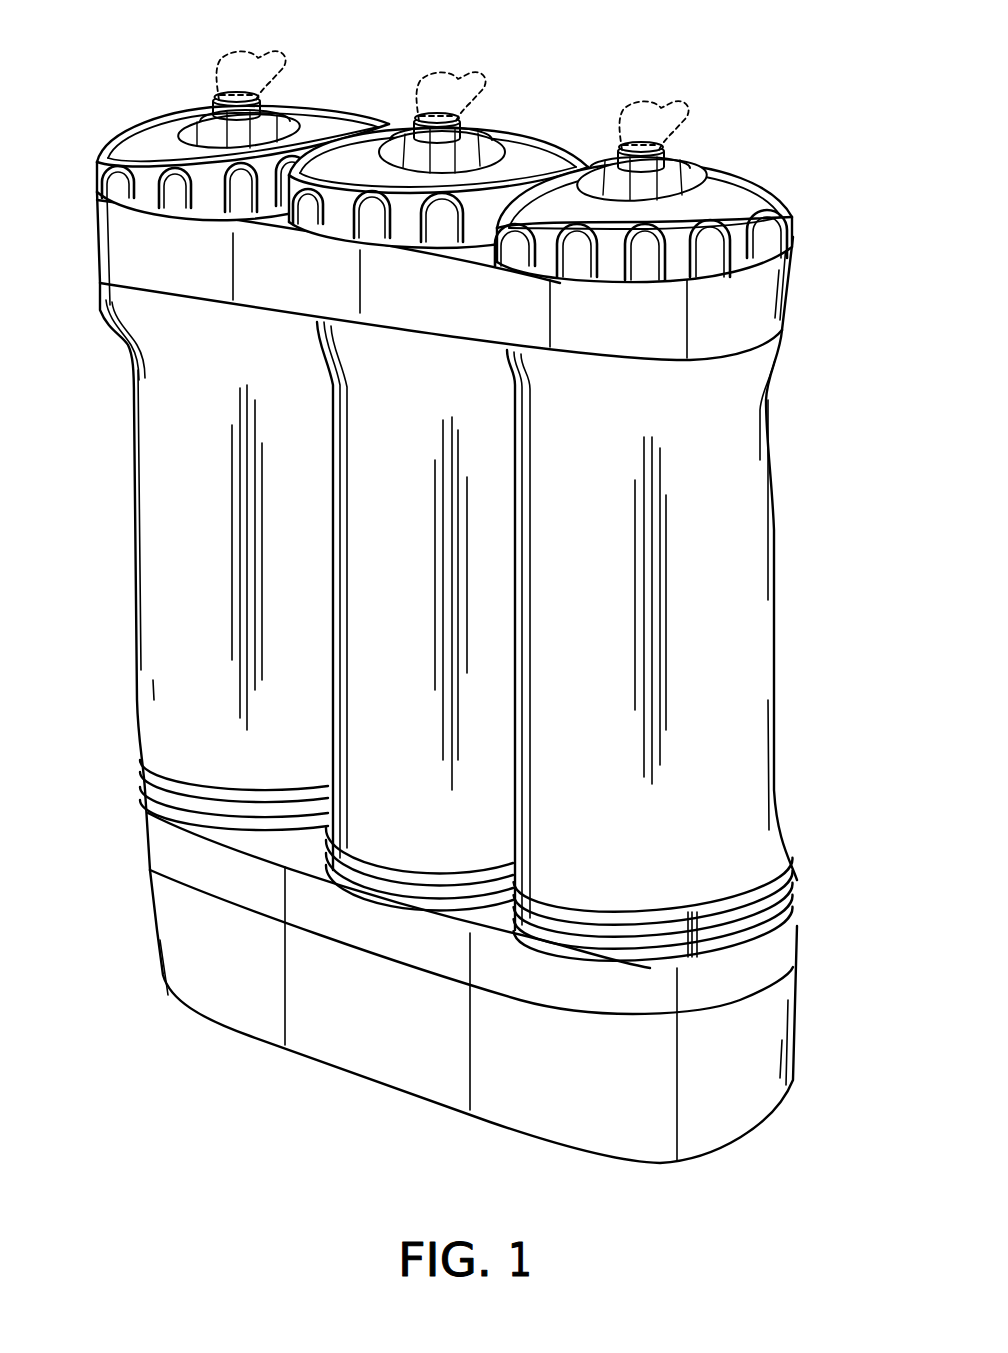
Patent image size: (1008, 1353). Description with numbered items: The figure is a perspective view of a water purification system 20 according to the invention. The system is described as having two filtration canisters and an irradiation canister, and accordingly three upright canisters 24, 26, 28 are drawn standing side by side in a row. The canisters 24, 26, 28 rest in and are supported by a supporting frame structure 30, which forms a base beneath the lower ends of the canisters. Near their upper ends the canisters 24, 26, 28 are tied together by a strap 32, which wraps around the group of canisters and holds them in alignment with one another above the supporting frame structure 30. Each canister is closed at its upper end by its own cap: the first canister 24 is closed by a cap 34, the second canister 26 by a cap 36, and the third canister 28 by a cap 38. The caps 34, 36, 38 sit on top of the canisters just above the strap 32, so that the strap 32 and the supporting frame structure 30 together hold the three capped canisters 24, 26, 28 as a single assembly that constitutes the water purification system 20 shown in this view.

The water purification system 20 is at (76, 258).
The canister 24 is at (210, 552).
The canister 26 is at (423, 594).
The canister 28 is at (622, 640).
The supporting frame structure 30 is at (808, 992).
The strap 32 is at (797, 292).
The cap 34 is at (318, 118).
The cap 36 is at (522, 145).
The cap 38 is at (725, 178).